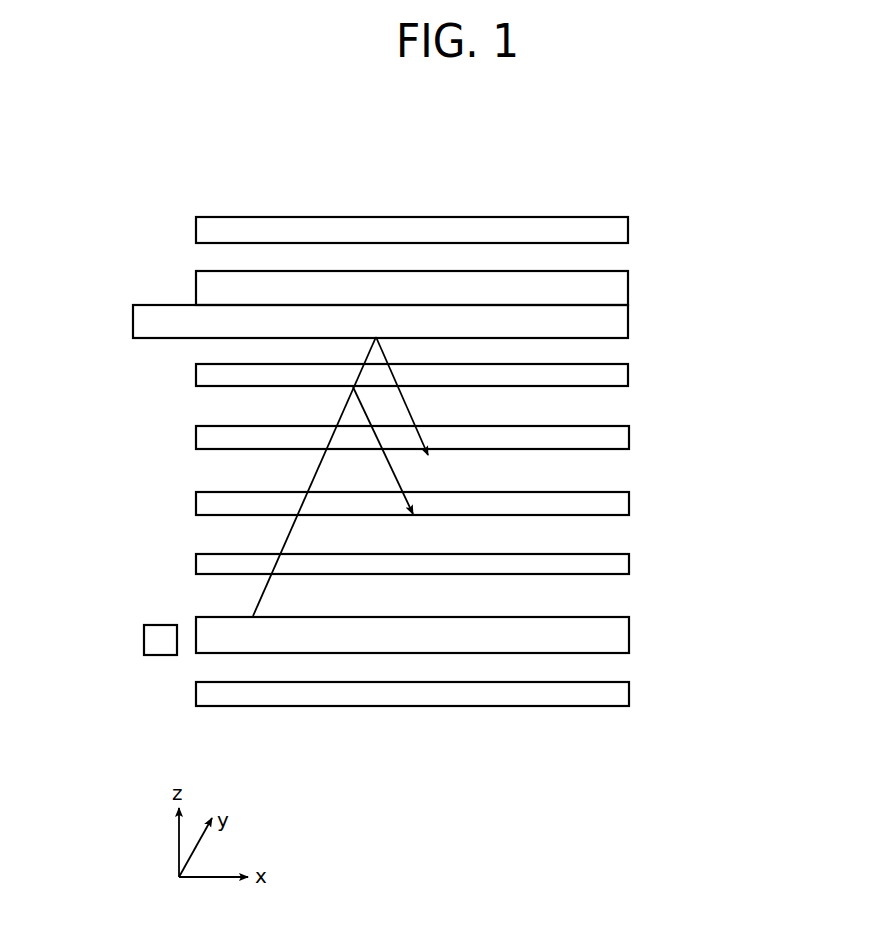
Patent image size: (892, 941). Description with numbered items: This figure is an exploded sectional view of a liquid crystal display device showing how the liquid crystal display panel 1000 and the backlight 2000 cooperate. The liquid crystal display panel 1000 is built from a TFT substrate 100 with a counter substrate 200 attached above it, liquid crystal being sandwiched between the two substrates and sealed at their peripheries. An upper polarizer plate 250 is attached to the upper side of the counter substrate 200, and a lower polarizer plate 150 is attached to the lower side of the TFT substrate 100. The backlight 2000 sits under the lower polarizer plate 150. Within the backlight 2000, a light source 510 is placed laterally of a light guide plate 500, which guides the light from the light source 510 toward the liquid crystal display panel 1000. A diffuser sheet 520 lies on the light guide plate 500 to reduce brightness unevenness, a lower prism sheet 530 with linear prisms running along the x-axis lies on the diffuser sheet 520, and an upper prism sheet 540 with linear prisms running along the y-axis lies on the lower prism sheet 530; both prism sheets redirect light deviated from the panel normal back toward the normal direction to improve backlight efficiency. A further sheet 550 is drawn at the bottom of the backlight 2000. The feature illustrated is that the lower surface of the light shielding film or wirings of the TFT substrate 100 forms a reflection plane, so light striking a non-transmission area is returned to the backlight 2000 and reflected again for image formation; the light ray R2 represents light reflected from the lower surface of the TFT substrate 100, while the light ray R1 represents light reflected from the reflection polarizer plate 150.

The liquid crystal display panel 1000 is at (472, 293).
The upper polarizer plate 250 is at (623, 232).
The counter substrate 200 is at (616, 287).
The TFT substrate 100 is at (614, 320).
The lower polarizer plate 150 is at (457, 373).
The backlight 2000 is at (431, 560).
The upper prism sheet 540 is at (616, 440).
The lower prism sheet 530 is at (618, 503).
The diffuser sheet 520 is at (618, 565).
The light guide plate 500 is at (614, 636).
The light source 510 is at (154, 642).
The reflective sheet 550 is at (618, 697).
The light ray reflected from the reflection polarizer plate R1 is at (342, 476).
The light ray reflected from the lower surface of the TFT substrate R2 is at (416, 413).